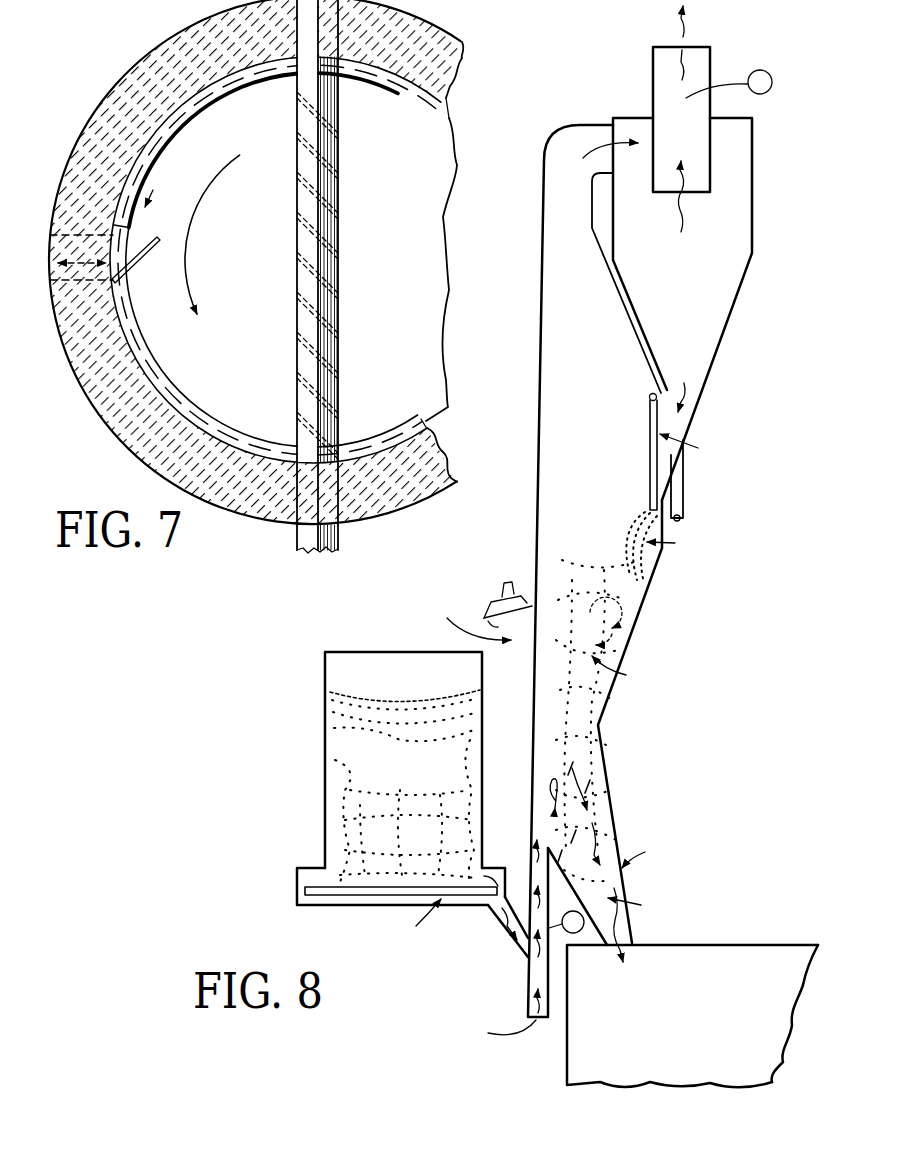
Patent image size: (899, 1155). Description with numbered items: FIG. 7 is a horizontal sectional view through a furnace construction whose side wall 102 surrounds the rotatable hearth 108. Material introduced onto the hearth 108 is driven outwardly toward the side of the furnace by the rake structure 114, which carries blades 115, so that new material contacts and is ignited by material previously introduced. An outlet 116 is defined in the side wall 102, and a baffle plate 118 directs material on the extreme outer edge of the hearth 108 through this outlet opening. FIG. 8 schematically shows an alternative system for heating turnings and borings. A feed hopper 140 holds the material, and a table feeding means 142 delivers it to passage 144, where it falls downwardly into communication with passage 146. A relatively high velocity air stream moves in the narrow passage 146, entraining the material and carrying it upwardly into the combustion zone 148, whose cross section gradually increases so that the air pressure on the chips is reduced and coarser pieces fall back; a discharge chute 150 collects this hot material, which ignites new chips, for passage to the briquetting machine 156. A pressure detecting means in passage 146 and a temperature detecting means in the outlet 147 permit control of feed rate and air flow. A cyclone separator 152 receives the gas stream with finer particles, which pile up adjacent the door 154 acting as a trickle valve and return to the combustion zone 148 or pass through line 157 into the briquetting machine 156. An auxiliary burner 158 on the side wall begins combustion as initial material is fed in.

In FIG. 7, the side wall 102 is at (149, 78).
In FIG. 7, the hearth 108 is at (400, 181).
In FIG. 7, the rake structure 114 is at (296, 248).
In FIG. 7, the blades 115 is at (296, 364).
In FIG. 7, the outlet 116 is at (135, 238).
In FIG. 7, the baffle plate 118 is at (143, 252).
In FIG. 8, the feed hopper 140 is at (333, 761).
In FIG. 8, the table feeding means 142 is at (357, 884).
In FIG. 8, the passage 144 is at (503, 931).
In FIG. 8, the passage 146 is at (527, 977).
In FIG. 8, the outlet 147 is at (657, 88).
In FIG. 8, the combustion zone 148 is at (610, 580).
In FIG. 8, the discharge chute 150 is at (593, 760).
In FIG. 8, the cyclone separator 152 is at (733, 194).
In FIG. 8, the door 154 is at (651, 442).
In FIG. 8, the briquetting machine 156 is at (772, 967).
In FIG. 8, the line 157 is at (684, 507).
In FIG. 8, the auxiliary burner 158 is at (530, 765).